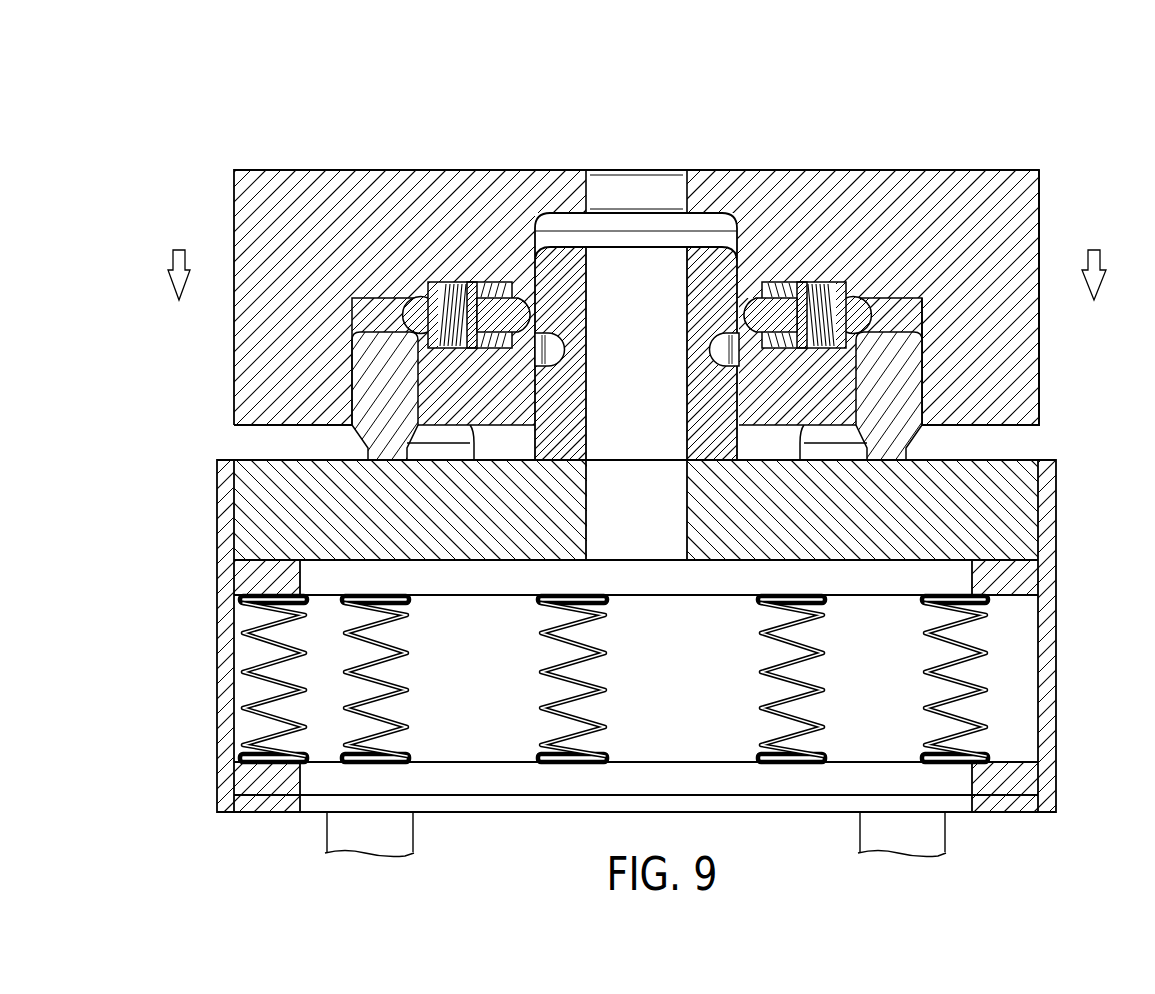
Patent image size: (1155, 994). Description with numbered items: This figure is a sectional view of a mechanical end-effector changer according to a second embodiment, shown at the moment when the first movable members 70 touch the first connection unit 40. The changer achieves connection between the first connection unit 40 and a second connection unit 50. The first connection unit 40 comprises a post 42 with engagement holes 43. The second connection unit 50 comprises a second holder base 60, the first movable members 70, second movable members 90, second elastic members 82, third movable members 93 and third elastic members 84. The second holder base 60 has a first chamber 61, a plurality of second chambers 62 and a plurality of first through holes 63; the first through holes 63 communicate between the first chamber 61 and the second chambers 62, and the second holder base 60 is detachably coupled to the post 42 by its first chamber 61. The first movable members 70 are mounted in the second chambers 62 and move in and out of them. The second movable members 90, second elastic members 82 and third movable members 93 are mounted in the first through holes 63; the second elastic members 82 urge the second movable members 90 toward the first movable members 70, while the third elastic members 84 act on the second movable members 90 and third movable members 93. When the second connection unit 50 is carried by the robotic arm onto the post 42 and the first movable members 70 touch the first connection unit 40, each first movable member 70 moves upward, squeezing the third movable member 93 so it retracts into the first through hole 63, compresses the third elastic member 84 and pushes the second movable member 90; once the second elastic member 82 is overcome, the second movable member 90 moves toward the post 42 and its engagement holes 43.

The first connection unit 40 is at (868, 562).
The post 42 is at (706, 270).
The engagement holes 43 is at (552, 334).
The second connection unit 50 is at (923, 151).
The second holder base 60 is at (984, 217).
The first chamber 61 is at (690, 200).
The second chambers 62 is at (350, 297).
The first through holes 63 is at (499, 283).
The first movable members 70 is at (357, 383).
The second elastic members 82 is at (511, 283).
The third elastic members 84 is at (460, 283).
The second movable members 90 is at (489, 283).
The third movable members 93 is at (428, 283).